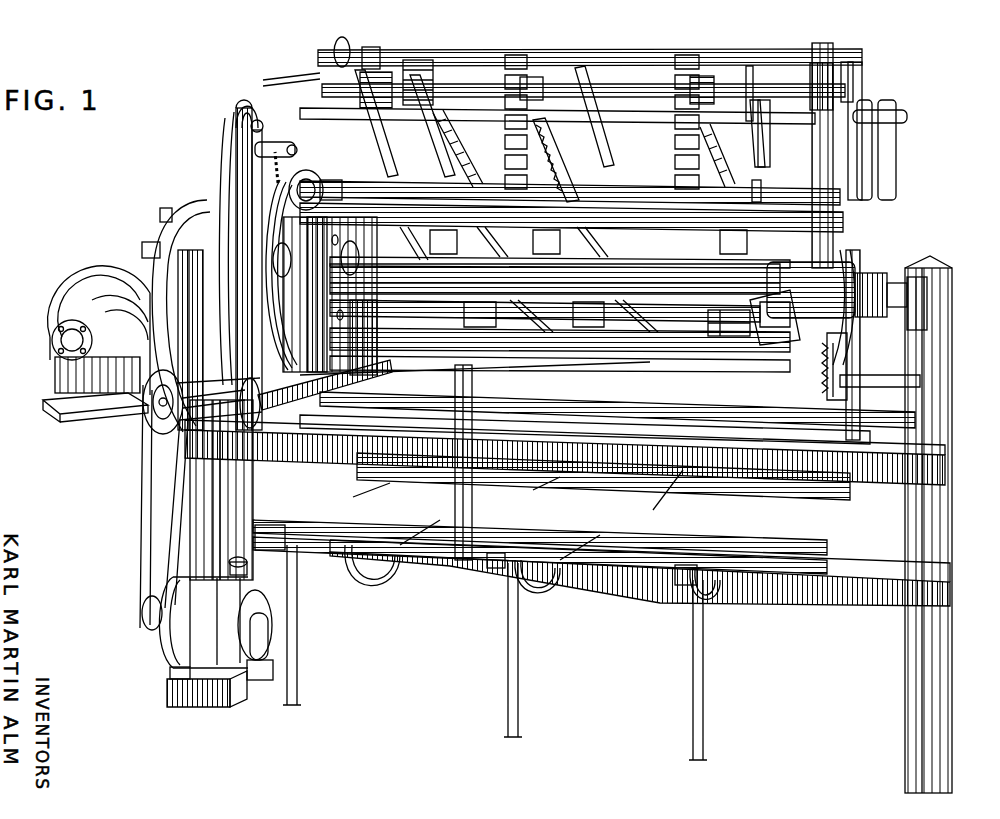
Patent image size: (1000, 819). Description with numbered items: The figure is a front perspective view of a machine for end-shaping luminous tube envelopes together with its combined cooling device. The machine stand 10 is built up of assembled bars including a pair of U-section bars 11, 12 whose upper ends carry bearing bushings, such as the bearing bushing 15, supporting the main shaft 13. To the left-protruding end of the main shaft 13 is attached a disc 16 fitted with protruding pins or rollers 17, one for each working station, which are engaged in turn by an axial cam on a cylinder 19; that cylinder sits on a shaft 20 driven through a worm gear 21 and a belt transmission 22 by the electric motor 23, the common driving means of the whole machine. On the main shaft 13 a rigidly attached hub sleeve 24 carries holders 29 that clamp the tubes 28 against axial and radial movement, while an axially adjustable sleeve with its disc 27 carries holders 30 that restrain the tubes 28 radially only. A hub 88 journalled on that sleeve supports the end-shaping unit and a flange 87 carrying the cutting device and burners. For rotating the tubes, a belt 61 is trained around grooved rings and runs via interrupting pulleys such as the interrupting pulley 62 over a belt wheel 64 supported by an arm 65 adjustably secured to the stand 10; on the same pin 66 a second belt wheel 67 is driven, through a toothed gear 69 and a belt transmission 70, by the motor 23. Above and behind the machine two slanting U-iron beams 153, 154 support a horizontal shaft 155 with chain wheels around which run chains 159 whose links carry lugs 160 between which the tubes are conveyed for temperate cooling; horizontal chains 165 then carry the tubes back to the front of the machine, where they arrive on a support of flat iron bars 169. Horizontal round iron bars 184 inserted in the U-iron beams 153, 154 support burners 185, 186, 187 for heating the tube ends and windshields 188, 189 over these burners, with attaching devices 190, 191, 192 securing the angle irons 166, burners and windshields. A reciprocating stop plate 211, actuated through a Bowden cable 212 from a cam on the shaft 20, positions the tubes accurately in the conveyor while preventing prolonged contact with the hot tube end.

The machine stand 10 is at (940, 540).
The U-section bar 11 is at (230, 490).
The U-section bar 12 is at (930, 502).
The main shaft 13 is at (678, 270).
The bearing bushing 15 is at (925, 297).
The disc 16 is at (155, 229).
The protruding pins or rollers 17 is at (163, 206).
The cylinder 19 is at (115, 277).
The shaft 20 is at (58, 343).
The worm gear 21 is at (68, 300).
The belt transmission 22 is at (140, 505).
The electric motor 23 is at (165, 646).
The hub sleeve 24 is at (262, 272).
The disc 27 is at (720, 322).
The tubes 28 is at (648, 52).
The holders 29 is at (330, 180).
The holders 30 is at (760, 186).
The belt 61 is at (298, 168).
The interrupting pulley 62 is at (278, 142).
The belt wheel 64 is at (246, 112).
The arm 65 is at (242, 190).
The pin 66 is at (259, 122).
The belt wheel 67 is at (226, 122).
The toothed gear 69 is at (150, 428).
The belt transmission 70 is at (147, 489).
The flange 87 is at (862, 262).
The hub 88 is at (810, 275).
The U-iron beam 153 is at (380, 73).
The U-iron beam 154 is at (822, 68).
The horizontal shaft 155 is at (656, 94).
The chains 159 is at (423, 63).
The lugs 160 is at (520, 162).
The chains 165 is at (400, 565).
The angle irons 166 is at (460, 150).
The flat iron bars 169 is at (282, 520).
The horizontal round iron bars 184 is at (620, 128).
The burner 185 is at (858, 78).
The burner 186 is at (760, 78).
The burner 187 is at (586, 84).
The windshield 188 is at (370, 50).
The windshield 189 is at (857, 50).
The attaching device 190 is at (306, 168).
The attaching device 191 is at (583, 150).
The attaching device 192 is at (895, 135).
The reciprocating stop plate 211 is at (337, 45).
The Bowden cable 212 is at (283, 78).